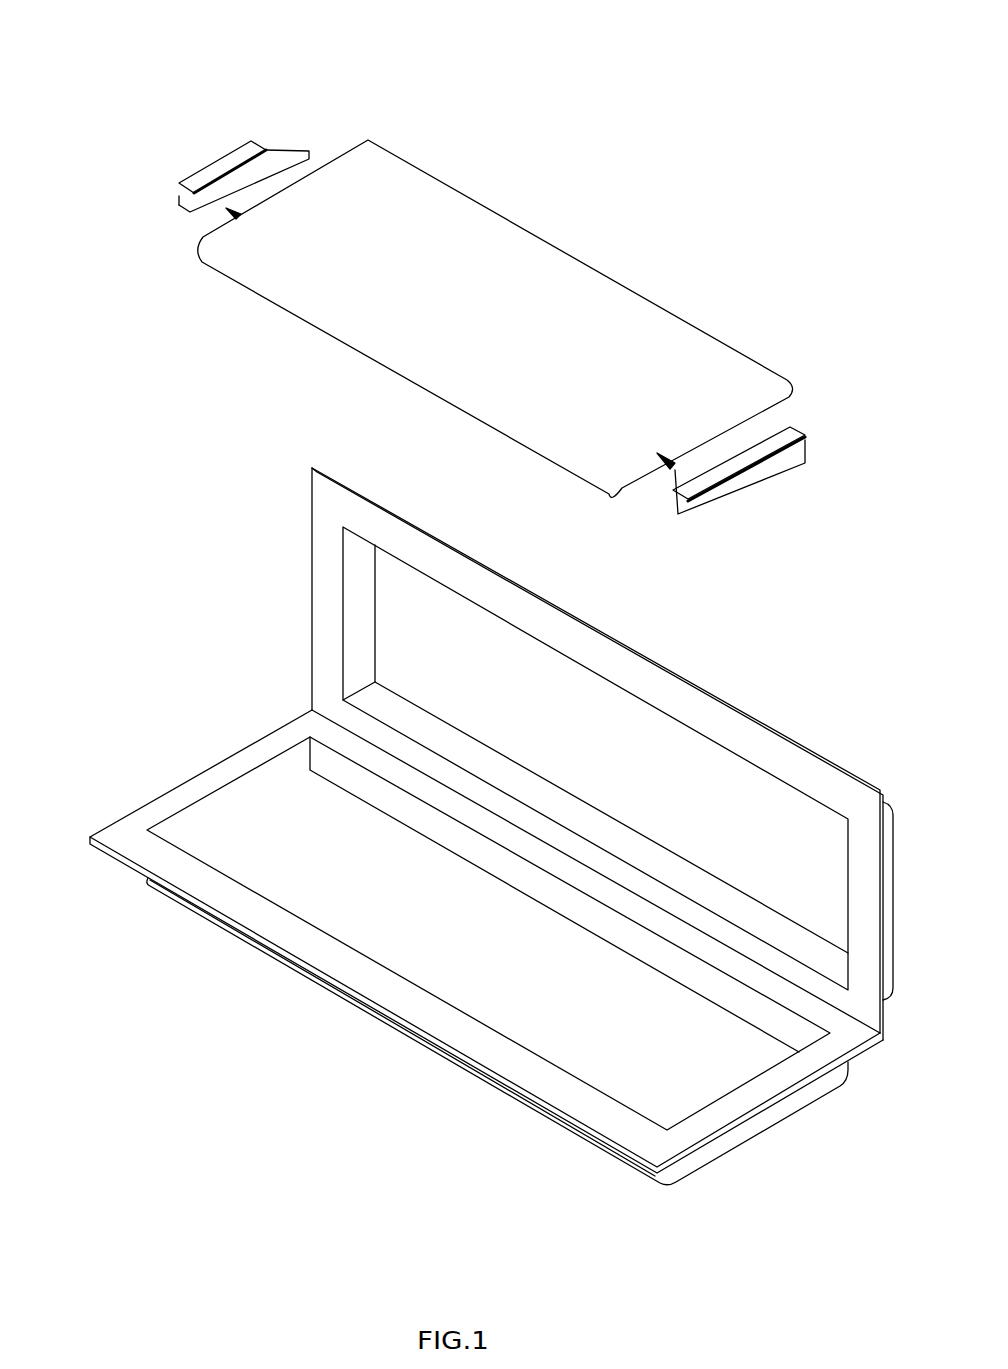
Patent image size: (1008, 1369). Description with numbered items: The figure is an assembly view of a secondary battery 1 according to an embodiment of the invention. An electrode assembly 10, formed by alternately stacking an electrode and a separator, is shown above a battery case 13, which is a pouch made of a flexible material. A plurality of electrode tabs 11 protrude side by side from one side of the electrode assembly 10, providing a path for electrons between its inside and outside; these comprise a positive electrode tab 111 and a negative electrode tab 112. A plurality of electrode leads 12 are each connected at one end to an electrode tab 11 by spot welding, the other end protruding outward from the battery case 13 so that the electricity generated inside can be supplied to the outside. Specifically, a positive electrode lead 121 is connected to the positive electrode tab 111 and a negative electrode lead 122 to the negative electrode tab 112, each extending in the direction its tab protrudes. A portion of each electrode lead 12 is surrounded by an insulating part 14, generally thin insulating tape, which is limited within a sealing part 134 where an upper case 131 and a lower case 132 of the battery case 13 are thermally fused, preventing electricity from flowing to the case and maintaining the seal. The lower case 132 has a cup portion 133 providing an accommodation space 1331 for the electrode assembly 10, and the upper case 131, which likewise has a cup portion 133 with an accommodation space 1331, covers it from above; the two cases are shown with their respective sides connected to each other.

The secondary battery 1 is at (121, 94).
The electrode assembly 10 is at (718, 184).
The electrode tab 11 is at (649, 171).
The positive electrode tab 111 is at (708, 437).
The negative electrode tab 112 is at (283, 190).
The electrode lead 12 is at (423, 460).
The positive electrode lead 121 is at (730, 498).
The negative electrode lead 122 is at (185, 192).
The battery case 13 is at (80, 640).
The upper case 131 is at (353, 608).
The lower case 132 is at (133, 823).
The cup portion 133 is at (758, 1130).
The accommodation space 1331 is at (624, 1080).
The sealing part 134 is at (478, 1040).
The insulating part 14 is at (287, 154).